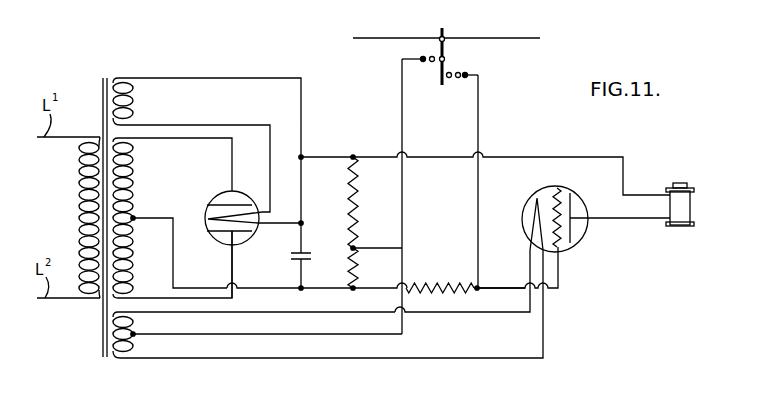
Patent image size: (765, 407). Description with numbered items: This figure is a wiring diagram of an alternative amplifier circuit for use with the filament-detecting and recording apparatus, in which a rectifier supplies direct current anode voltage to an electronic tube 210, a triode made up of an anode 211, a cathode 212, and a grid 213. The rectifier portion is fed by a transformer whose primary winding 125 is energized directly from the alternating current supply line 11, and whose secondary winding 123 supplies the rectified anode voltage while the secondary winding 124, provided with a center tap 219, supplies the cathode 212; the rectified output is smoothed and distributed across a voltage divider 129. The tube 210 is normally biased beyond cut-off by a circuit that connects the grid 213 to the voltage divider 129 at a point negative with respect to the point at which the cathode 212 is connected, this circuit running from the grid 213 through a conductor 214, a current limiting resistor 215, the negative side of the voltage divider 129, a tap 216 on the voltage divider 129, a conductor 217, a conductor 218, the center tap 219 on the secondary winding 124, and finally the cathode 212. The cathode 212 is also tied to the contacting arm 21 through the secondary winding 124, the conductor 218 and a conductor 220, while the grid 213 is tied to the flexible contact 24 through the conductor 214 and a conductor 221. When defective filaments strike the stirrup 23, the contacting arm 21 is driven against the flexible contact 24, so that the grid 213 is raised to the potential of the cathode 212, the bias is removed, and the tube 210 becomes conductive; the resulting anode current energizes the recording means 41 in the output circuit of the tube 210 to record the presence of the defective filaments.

The supply line 11 is at (362, 38).
The contacting arm 21 is at (444, 47).
The stirrup 23 is at (439, 39).
The flexible contact 24 is at (448, 80).
The recording means 41 is at (683, 210).
The secondary winding 123 is at (133, 185).
The secondary winding 124 is at (128, 347).
The primary winding 125 is at (80, 205).
The voltage divider 129 is at (351, 205).
The electronic tube 210 is at (590, 240).
The anode 211 is at (572, 195).
The cathode 212 is at (533, 222).
The grid 213 is at (556, 188).
The conductor 214 is at (497, 288).
The current limiting resistor 215 is at (437, 288).
The tap 216 is at (351, 248).
The conductor 217 is at (378, 248).
The conductor 218 is at (277, 323).
The center tap 219 is at (133, 334).
The conductor 220 is at (402, 186).
The conductor 221 is at (478, 120).